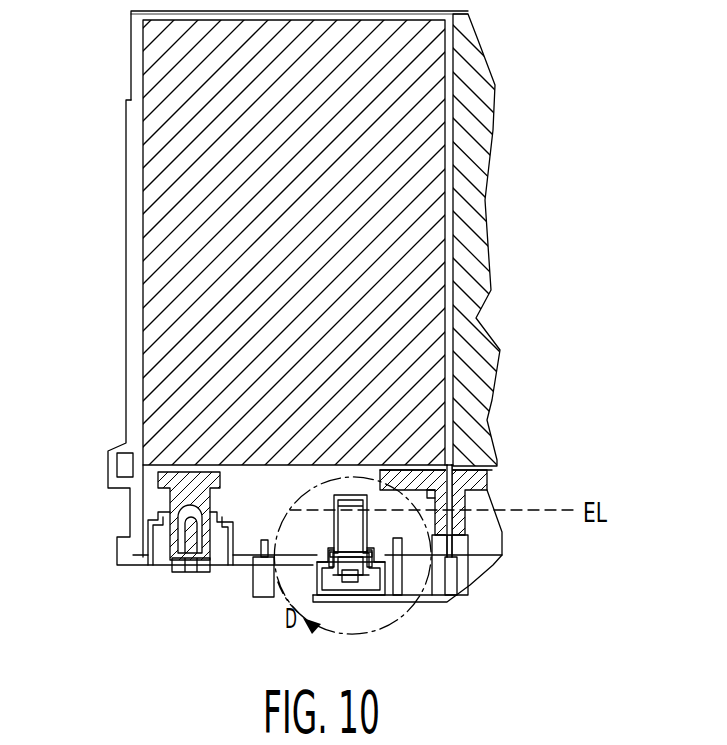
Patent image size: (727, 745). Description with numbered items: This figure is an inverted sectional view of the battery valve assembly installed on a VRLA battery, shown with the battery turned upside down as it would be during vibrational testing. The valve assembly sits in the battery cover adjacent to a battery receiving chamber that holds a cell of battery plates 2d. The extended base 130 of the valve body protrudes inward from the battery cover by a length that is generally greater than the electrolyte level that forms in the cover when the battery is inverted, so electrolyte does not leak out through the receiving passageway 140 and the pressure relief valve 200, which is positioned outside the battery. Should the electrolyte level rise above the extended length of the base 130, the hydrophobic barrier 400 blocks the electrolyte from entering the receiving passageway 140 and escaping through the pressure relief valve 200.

The cell of battery plates 2d is at (311, 268).
The hydrophobic barrier 400 is at (207, 516).
The extended base 130 is at (338, 525).
The receiving passageway 140 is at (353, 538).
The pressure relief valve 200 is at (353, 583).